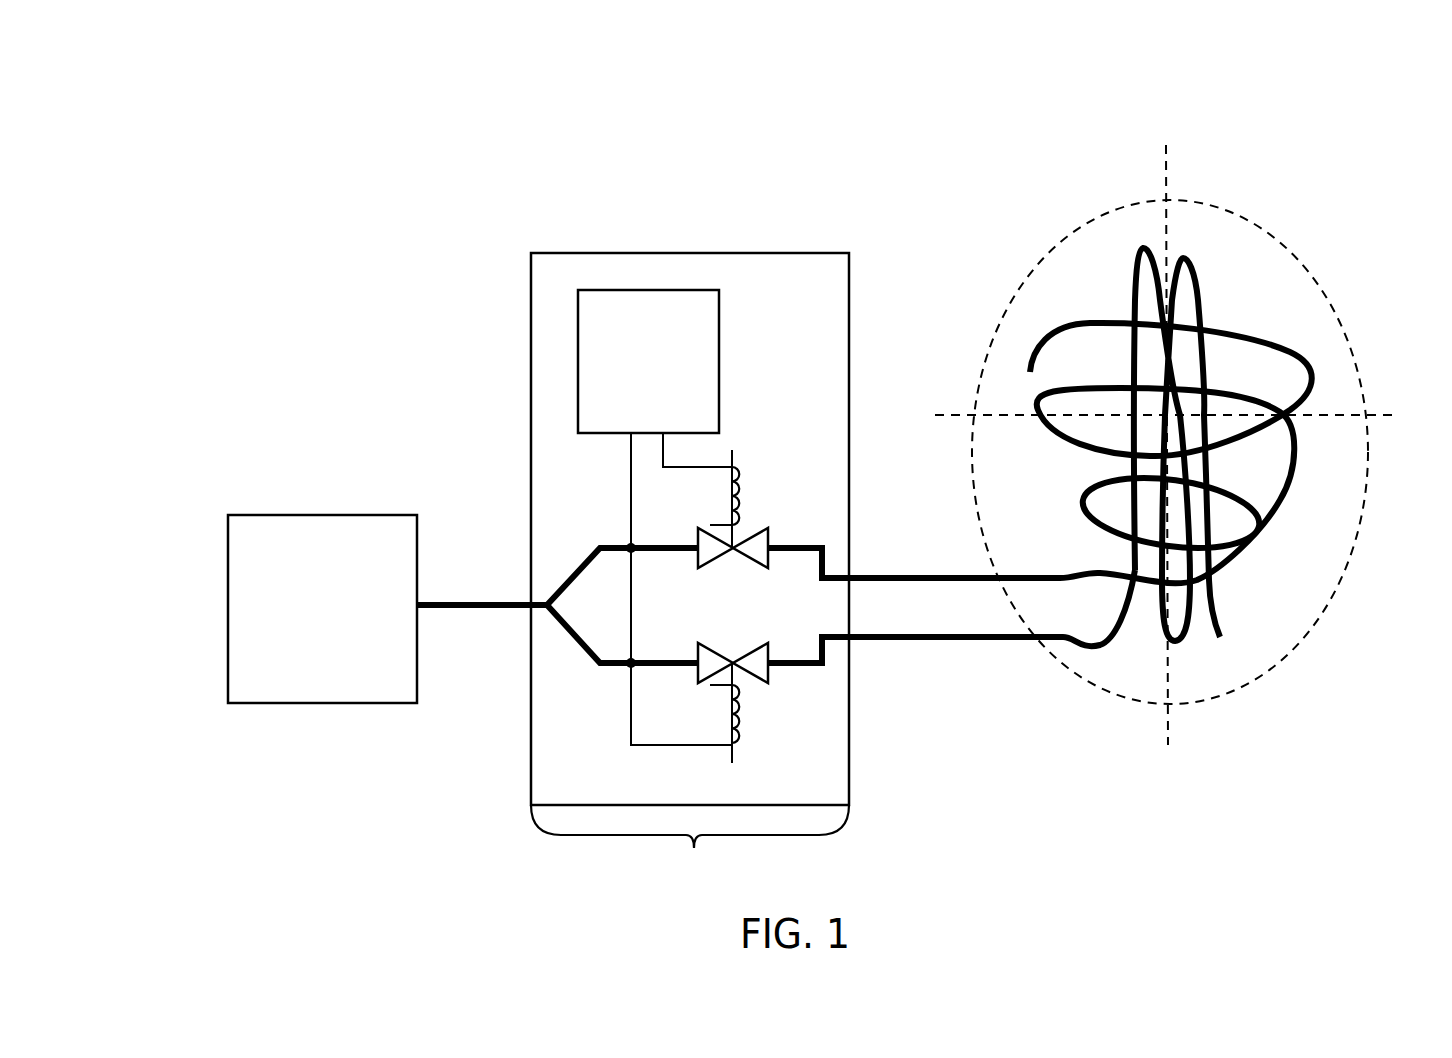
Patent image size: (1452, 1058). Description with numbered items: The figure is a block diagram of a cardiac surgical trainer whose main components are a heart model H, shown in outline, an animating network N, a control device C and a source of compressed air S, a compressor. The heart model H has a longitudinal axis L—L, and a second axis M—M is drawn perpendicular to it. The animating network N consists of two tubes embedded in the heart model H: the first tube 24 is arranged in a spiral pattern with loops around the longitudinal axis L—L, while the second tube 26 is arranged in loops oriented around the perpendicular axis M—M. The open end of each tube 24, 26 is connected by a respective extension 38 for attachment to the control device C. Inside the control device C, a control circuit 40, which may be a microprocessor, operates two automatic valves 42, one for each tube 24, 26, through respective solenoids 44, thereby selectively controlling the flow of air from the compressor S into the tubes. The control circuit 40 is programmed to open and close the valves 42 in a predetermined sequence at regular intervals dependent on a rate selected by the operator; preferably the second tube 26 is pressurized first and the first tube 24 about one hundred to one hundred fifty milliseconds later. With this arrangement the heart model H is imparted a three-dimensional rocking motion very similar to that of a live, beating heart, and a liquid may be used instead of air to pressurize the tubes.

The source of compressed air S is at (322, 609).
The control device C is at (779, 240).
The control circuit 40 is at (605, 278).
The automatic valve 42 is at (782, 532).
The solenoid 44 is at (765, 479).
The extension 38 is at (990, 620).
The animating network N is at (1170, 815).
The heart model H is at (1300, 250).
The longitudinal axis L is at (1181, 450).
The axis perpendicular to longitudinal axis M is at (1167, 404).
The first tube 24 is at (1020, 330).
The second tube 26 is at (1128, 243).